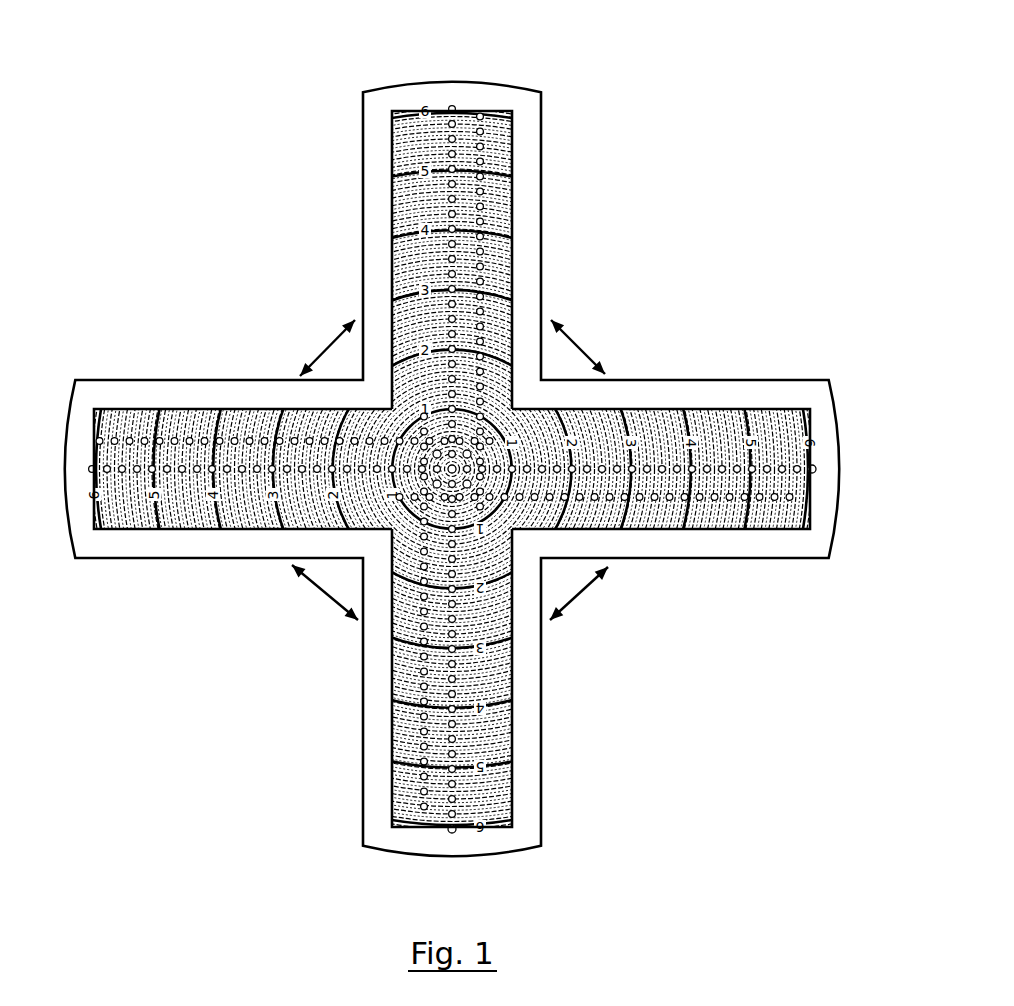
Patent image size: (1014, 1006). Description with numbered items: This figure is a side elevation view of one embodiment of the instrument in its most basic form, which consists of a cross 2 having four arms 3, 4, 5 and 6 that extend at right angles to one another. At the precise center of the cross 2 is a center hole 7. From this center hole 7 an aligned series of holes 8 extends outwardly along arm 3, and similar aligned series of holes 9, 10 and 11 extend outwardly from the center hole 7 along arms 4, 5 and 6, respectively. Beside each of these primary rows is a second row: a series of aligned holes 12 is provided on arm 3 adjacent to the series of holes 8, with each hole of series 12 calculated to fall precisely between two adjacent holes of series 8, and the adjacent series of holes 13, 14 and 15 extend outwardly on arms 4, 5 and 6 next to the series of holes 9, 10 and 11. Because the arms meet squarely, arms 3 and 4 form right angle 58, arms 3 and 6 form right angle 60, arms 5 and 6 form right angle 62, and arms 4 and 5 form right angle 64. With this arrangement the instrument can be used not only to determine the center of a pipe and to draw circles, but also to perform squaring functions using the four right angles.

The cross 2 is at (543, 235).
The arm 3 is at (497, 131).
The arm 4 is at (778, 409).
The arm 5 is at (507, 795).
The arm 6 is at (124, 506).
The center hole 7 is at (453, 467).
The aligned series of holes 8 is at (452, 111).
The aligned series of holes 9 is at (814, 469).
The aligned series of holes 10 is at (455, 830).
The aligned series of holes 11 is at (90, 470).
The series of aligned holes 12 is at (481, 117).
The adjacent series of holes 13 is at (814, 497).
The adjacent series of holes 14 is at (425, 821).
The adjacent series of holes 15 is at (97, 441).
The right angle 58 is at (585, 338).
The right angle 60 is at (320, 342).
The right angle 62 is at (318, 600).
The right angle 64 is at (582, 600).